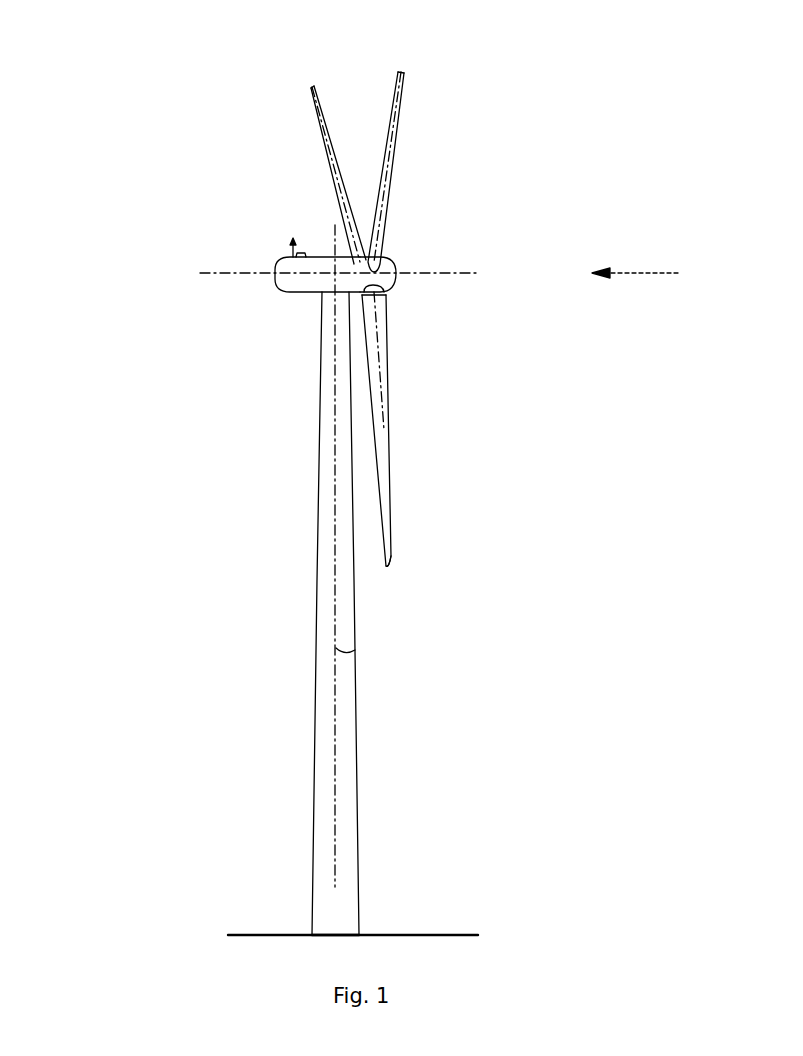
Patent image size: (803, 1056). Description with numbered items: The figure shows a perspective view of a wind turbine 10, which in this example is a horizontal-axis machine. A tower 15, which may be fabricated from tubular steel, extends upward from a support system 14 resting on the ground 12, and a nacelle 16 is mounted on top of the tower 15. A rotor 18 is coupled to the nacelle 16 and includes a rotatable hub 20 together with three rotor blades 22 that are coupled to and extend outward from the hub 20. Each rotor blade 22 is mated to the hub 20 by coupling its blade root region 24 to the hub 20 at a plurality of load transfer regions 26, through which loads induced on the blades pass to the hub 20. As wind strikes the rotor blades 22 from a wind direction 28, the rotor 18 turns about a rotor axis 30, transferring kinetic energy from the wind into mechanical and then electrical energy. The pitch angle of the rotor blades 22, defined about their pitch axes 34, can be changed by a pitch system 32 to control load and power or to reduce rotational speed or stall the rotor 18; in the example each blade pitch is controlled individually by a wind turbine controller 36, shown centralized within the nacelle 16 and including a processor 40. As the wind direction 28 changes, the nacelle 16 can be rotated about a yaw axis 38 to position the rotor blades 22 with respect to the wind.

The wind turbine 10 is at (133, 95).
The ground 12 is at (248, 933).
The support system 14 is at (305, 933).
The tower 15 is at (330, 592).
The nacelle 16 is at (296, 293).
The rotor 18 is at (400, 192).
The rotatable hub 20 is at (386, 275).
The rotor blade 22 is at (333, 150).
The blade root region 24 is at (385, 362).
The load transfer regions 26 is at (376, 292).
The wind direction 28 is at (650, 272).
The rotor axis 30 is at (452, 275).
The pitch system 32 is at (378, 305).
The pitch axes 34 is at (313, 90).
The wind turbine controller 36 is at (335, 306).
The yaw axis 38 is at (355, 650).
The processor 40 is at (342, 225).